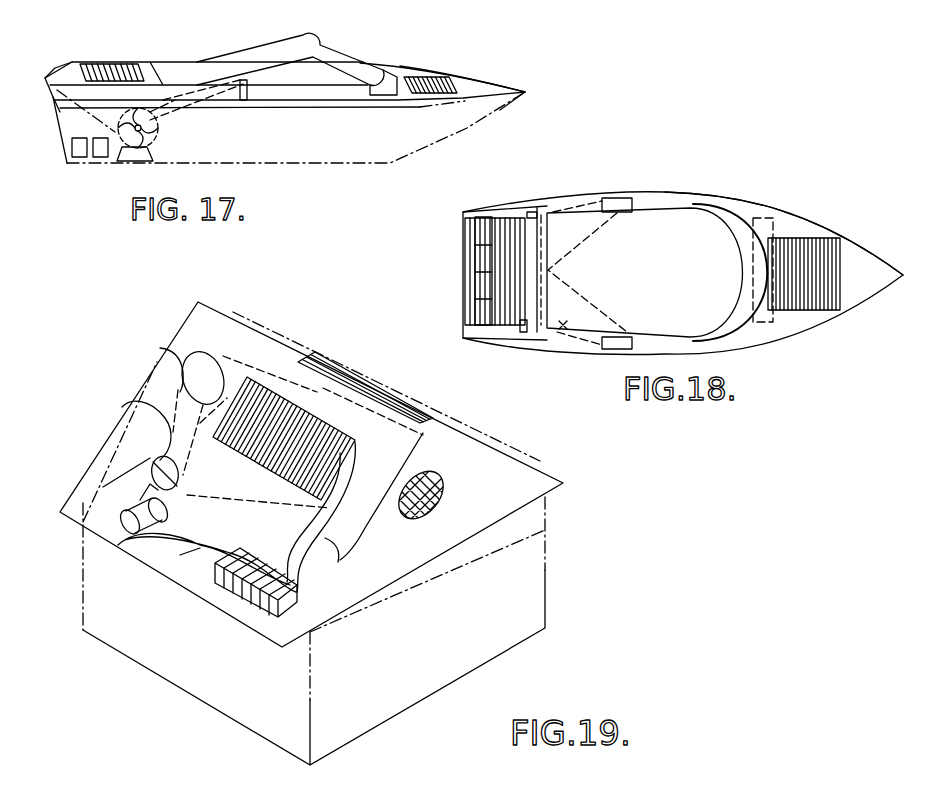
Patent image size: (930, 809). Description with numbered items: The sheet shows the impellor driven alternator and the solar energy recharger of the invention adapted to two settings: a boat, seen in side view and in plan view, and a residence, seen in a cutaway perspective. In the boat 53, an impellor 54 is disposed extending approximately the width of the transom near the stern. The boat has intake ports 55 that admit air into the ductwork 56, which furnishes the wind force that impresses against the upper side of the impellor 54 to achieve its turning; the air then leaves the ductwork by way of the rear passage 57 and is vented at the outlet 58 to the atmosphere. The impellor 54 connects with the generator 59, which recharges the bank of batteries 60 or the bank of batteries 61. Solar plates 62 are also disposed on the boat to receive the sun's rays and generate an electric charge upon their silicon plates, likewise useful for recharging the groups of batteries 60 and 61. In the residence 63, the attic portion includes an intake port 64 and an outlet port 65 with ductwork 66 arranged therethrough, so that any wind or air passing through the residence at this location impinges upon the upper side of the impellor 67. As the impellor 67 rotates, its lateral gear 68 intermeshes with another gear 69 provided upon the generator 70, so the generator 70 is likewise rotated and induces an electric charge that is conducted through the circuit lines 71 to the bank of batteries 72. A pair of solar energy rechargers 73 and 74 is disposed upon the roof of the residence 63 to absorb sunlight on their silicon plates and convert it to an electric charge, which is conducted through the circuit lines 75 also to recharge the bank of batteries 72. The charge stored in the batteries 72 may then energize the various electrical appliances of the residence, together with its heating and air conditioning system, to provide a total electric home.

In FIG. 17, the boat 53 is at (475, 84).
In FIG. 18, the boat 53 is at (760, 207).
In FIG. 17, the impellor 54 is at (138, 150).
In FIG. 18, the impellor 54 is at (533, 212).
In FIG. 17, the intake ports 55 is at (245, 93).
In FIG. 18, the intake ports 55 is at (617, 202).
In FIG. 17, the ductwork 56 is at (174, 100).
In FIG. 18, the ductwork 56 is at (573, 200).
In FIG. 17, the rear passage 57 is at (58, 110).
In FIG. 17, the outlet 58 is at (52, 82).
In FIG. 18, the generator 59 is at (522, 331).
In FIG. 17, the bank of batteries 60 is at (80, 158).
In FIG. 18, the bank of batteries 60 is at (479, 217).
In FIG. 18, the bank of batteries 61 is at (762, 325).
In FIG. 17, the solar plates 62 is at (94, 63).
In FIG. 18, the solar plates 62 is at (467, 236).
In FIG. 19, the residence 63 is at (547, 561).
In FIG. 19, the intake port 64 is at (446, 490).
In FIG. 19, the outlet port 65 is at (161, 348).
In FIG. 19, the ductwork 66 is at (285, 503).
In FIG. 19, the impellor 67 is at (124, 407).
In FIG. 19, the lateral gear 68 is at (160, 455).
In FIG. 19, the gear 69 is at (177, 490).
In FIG. 19, the generator 70 is at (135, 557).
In FIG. 19, the circuit lines 71 is at (183, 553).
In FIG. 19, the bank of batteries 72 is at (263, 606).
In FIG. 19, the solar energy recharger 73 is at (358, 380).
In FIG. 19, the solar energy recharger 74 is at (342, 497).
In FIG. 19, the circuit lines 75 is at (338, 556).